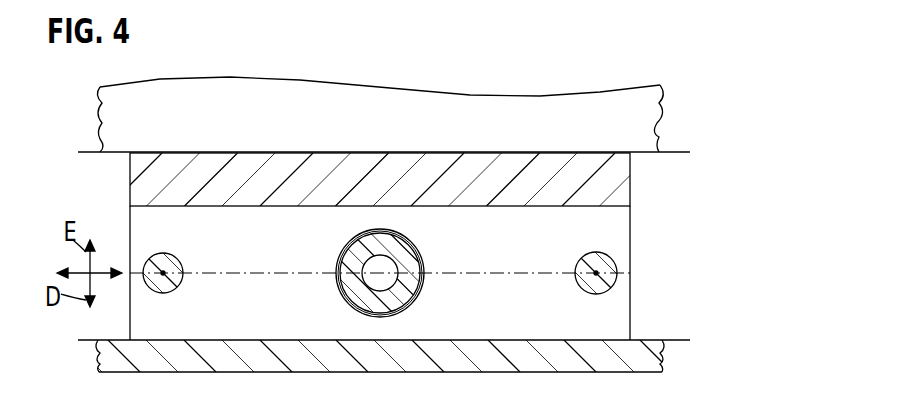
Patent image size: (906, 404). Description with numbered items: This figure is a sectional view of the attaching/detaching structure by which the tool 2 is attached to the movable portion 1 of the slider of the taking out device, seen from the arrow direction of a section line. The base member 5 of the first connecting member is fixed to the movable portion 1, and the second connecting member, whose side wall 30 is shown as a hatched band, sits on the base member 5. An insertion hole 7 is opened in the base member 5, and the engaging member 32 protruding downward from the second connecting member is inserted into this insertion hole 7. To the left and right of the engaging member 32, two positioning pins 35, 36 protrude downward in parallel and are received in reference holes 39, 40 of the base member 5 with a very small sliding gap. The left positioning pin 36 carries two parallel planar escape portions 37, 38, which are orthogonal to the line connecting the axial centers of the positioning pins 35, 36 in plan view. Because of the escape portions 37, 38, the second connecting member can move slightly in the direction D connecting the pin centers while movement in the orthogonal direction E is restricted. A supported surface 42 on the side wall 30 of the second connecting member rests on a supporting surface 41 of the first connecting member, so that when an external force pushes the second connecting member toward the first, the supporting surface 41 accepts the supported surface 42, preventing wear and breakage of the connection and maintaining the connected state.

The movable portion 1 is at (645, 366).
The tool 2 is at (618, 115).
The base member 5 is at (615, 232).
The insertion hole 7 is at (415, 260).
The side wall 30 is at (615, 172).
The engaging member 32 is at (418, 296).
The positioning pin 35 is at (617, 288).
The positioning pin 36 is at (161, 292).
The escape portion 37 is at (185, 270).
The escape portion 38 is at (142, 270).
The reference hole 39 is at (617, 262).
The reference hole 40 is at (177, 287).
The supporting surface 41 is at (240, 204).
The supported surface 42 is at (280, 218).